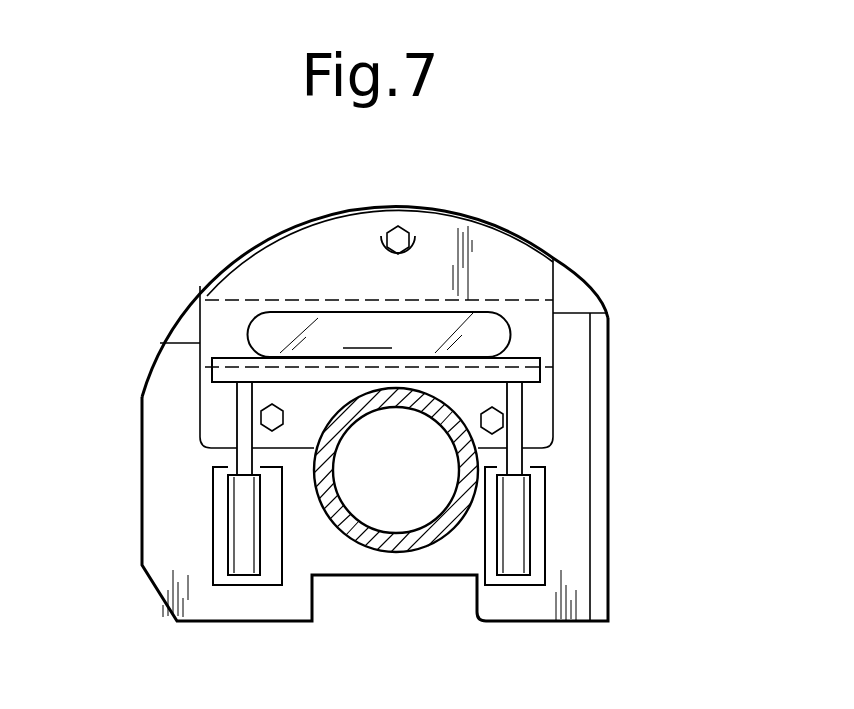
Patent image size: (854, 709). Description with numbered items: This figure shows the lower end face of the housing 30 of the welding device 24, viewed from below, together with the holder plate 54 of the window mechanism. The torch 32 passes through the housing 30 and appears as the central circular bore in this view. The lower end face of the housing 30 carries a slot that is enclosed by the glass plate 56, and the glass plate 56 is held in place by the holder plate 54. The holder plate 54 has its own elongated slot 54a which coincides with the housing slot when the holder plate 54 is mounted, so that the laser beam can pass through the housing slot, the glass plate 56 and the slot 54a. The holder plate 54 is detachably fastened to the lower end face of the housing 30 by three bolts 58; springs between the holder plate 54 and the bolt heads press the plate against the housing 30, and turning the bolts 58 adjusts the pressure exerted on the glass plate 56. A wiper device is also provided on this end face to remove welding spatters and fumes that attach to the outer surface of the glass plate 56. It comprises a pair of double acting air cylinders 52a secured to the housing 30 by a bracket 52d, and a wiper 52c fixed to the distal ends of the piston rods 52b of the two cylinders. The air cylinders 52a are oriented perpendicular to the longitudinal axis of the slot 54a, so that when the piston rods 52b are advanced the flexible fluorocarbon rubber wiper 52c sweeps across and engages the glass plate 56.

The lock assembly 24 is at (282, 199).
The housing 30 is at (237, 255).
The torch 32 is at (392, 548).
The holder plate 54 is at (503, 258).
The slot 54a is at (512, 338).
The glass plate 56 is at (345, 300).
The bolts 58 is at (404, 225).
The double acting air cylinders 52a is at (232, 570).
The piston rods 52b is at (237, 416).
The wiper 52c is at (540, 380).
The bracket 52d is at (213, 500).